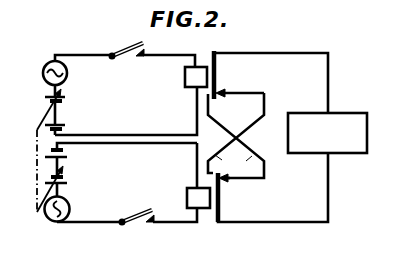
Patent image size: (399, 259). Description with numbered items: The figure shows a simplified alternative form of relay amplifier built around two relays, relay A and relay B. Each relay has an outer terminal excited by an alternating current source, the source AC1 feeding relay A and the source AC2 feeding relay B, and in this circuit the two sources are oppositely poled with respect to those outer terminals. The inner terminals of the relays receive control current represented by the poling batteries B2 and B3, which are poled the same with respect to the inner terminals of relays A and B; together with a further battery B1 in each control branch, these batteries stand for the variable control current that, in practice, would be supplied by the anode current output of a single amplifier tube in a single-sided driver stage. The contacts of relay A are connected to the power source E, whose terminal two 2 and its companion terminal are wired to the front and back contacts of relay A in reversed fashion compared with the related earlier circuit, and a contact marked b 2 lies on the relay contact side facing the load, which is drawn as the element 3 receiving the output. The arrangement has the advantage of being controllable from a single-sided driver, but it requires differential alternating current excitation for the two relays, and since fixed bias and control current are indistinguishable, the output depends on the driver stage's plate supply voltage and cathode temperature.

The source of alternating current AC1 is at (67, 73).
The source of alternating current AC2 is at (73, 209).
The battery B1 is at (66, 127).
The poling battery B2 is at (66, 99).
The poling battery B3 is at (67, 181).
The relay A is at (185, 77).
The relay B is at (187, 200).
The power source E is at (230, 174).
The contact b is at (223, 160).
The terminal of the power source 2 is at (247, 160).
The motor 3 is at (347, 113).